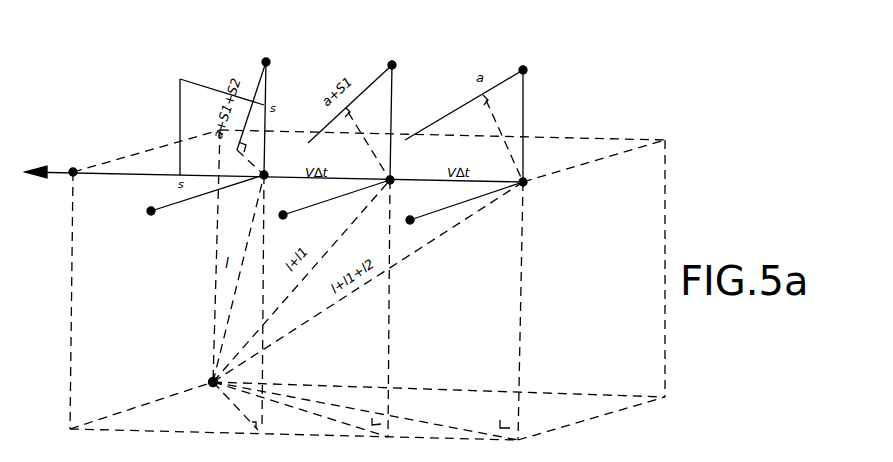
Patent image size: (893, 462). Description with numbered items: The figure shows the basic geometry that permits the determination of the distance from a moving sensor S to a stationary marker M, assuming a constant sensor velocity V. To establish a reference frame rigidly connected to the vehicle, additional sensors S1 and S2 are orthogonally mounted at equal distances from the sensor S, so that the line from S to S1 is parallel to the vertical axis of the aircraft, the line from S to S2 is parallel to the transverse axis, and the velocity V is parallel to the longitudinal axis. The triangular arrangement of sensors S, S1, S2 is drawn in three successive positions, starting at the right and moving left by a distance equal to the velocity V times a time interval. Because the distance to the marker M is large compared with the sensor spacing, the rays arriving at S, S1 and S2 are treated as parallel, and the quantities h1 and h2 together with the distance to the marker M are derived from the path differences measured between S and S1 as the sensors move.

The sensor velocity V is at (274, 163).
The sensor S is at (399, 169).
The additional sensor S1 is at (405, 111).
The additional sensor S2 is at (329, 199).
The stationary marker M is at (354, 307).
The quantity h1 is at (54, 300).
The quantity h2 is at (203, 127).